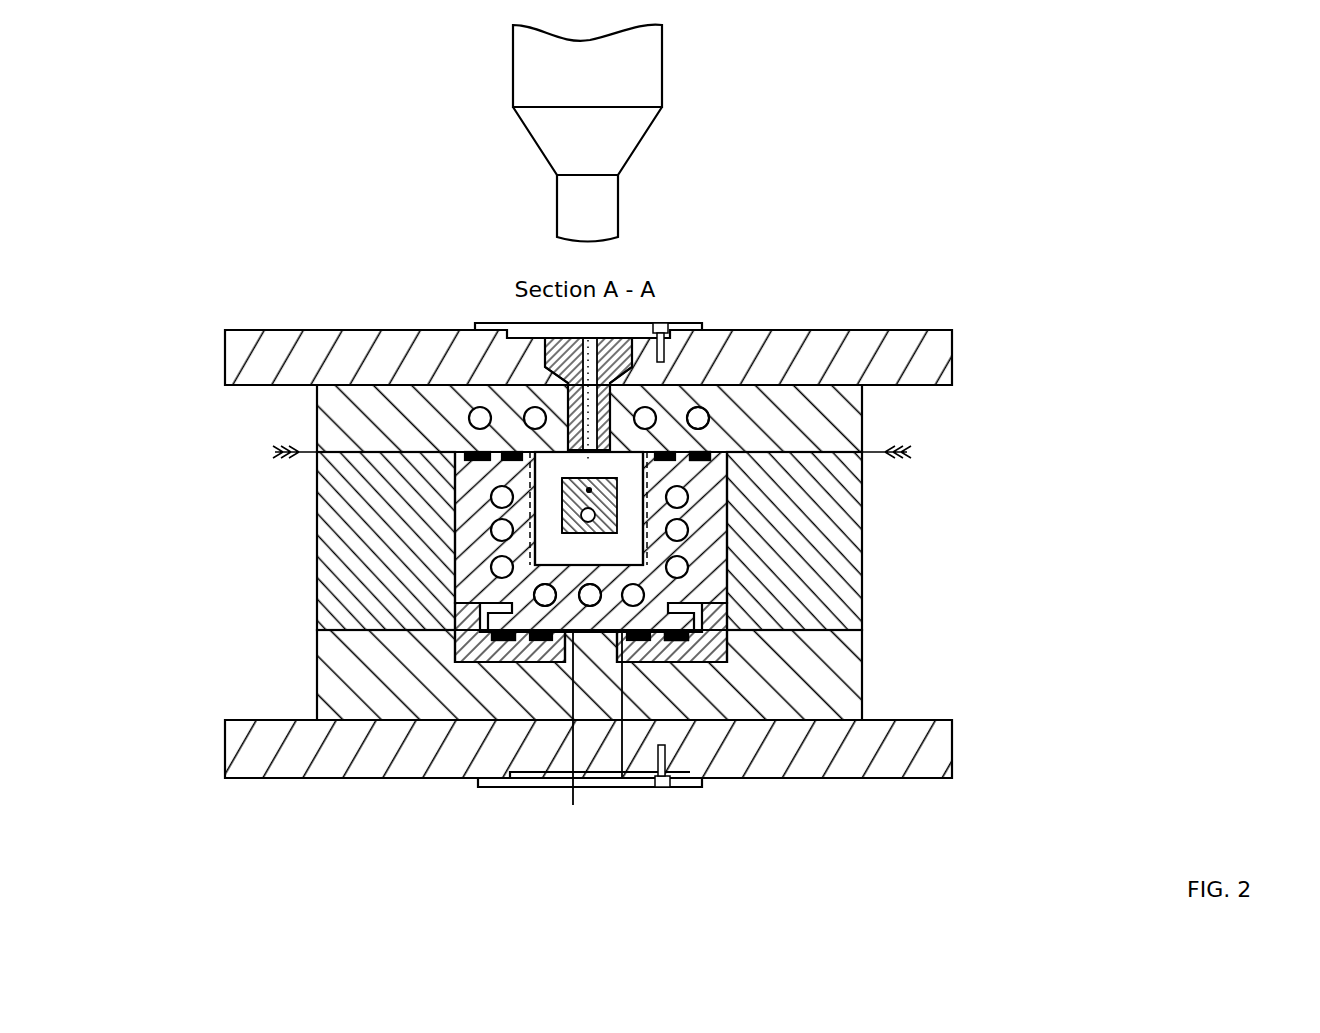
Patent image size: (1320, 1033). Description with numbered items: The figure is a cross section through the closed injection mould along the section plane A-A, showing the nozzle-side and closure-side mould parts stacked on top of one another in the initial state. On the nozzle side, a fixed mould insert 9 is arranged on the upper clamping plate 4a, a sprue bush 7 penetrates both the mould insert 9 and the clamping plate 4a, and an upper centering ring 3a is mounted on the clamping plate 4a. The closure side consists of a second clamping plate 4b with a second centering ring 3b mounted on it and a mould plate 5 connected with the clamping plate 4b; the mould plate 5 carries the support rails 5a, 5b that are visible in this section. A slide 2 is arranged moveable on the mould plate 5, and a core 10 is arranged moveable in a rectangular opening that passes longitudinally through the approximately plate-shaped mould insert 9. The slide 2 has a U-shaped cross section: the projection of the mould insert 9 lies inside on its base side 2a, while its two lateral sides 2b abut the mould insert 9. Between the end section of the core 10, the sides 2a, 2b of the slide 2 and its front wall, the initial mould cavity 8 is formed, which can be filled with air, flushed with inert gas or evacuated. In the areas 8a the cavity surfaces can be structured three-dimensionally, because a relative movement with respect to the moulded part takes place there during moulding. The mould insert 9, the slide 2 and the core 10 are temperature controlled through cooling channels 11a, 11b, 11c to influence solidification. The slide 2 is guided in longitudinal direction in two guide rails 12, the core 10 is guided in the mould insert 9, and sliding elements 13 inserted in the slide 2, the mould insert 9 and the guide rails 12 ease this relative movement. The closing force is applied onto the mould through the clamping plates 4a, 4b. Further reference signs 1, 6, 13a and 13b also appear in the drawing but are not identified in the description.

The upper mold block 1 is at (780, 392).
The slide 2 is at (705, 515).
The base side 2a is at (591, 720).
The lateral sides 2b is at (707, 512).
The upper centering ring 3a is at (697, 326).
The second centering ring 3b is at (703, 785).
The clamping plate 4a is at (350, 360).
The second clamping plate 4b is at (372, 768).
The mould plate 5 is at (837, 667).
The support rail 5a is at (837, 555).
The support rail 5b is at (328, 552).
The injection nozzle 6 is at (603, 207).
The sprue bush 7 is at (558, 342).
The mould cavity 8 is at (563, 512).
The areas 8a is at (652, 580).
The fixed mould insert 9 is at (818, 400).
The core 10 is at (563, 512).
The cooling channel 11a is at (545, 606).
The cooling channel 11b is at (698, 417).
The cooling channel 11c is at (592, 602).
The guide rails 12 is at (497, 642).
The sliding elements 13 is at (705, 455).
The upper seal 13a is at (462, 452).
The lower seal 13b is at (540, 641).